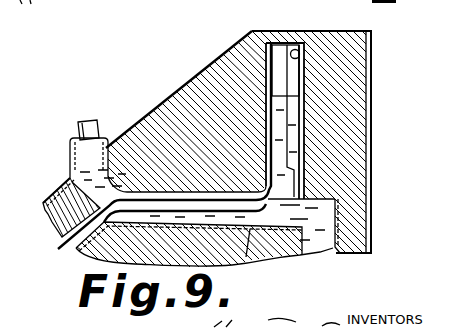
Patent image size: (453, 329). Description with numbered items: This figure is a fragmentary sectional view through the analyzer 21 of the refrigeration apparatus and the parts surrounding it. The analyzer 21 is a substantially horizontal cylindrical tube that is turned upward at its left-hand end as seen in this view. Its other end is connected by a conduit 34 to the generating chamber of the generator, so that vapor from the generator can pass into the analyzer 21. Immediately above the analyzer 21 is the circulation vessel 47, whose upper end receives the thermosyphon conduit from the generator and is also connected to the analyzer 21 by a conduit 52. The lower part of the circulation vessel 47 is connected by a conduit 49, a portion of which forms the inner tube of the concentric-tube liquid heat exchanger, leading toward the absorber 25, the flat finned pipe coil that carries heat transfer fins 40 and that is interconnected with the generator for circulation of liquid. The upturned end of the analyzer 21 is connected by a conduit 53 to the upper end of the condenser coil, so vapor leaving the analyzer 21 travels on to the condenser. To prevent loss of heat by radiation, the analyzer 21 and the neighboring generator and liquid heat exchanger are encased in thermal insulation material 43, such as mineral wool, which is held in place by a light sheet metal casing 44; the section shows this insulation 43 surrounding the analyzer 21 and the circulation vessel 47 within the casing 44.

The analyzer 21 is at (252, 260).
The absorber 25 is at (164, 6).
The conduit 34 is at (327, 251).
The heat transfer fins 40 is at (25, 12).
The thermal insulation material 43 is at (181, 101).
The sheet metal casing 44 is at (192, 78).
The circulation vessel 47 is at (282, 44).
The conduit 49 is at (63, 250).
The conduit 52 is at (296, 83).
The conduit 53 is at (77, 132).